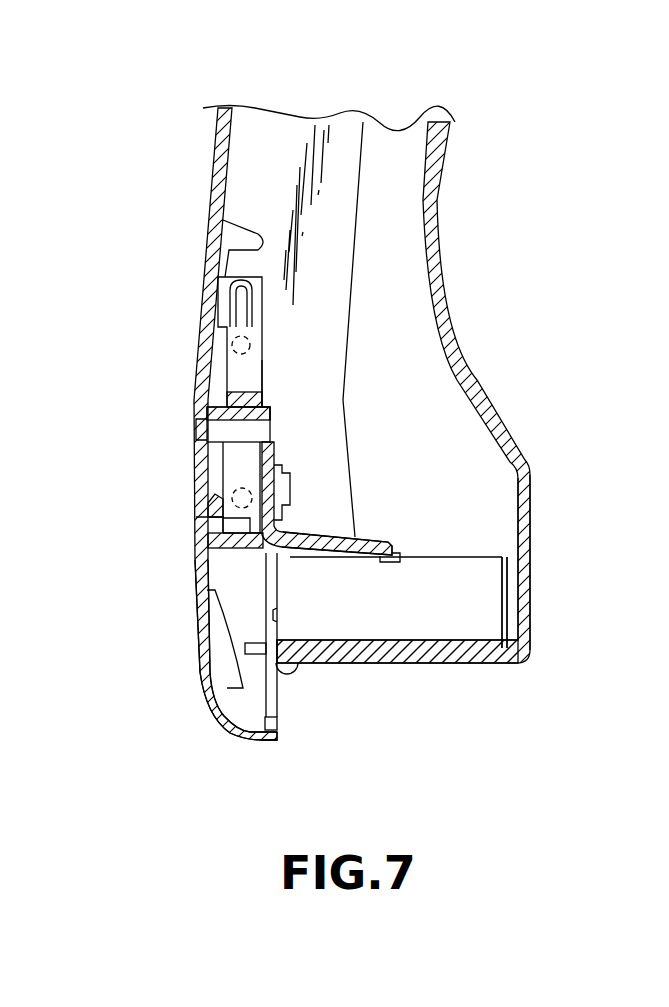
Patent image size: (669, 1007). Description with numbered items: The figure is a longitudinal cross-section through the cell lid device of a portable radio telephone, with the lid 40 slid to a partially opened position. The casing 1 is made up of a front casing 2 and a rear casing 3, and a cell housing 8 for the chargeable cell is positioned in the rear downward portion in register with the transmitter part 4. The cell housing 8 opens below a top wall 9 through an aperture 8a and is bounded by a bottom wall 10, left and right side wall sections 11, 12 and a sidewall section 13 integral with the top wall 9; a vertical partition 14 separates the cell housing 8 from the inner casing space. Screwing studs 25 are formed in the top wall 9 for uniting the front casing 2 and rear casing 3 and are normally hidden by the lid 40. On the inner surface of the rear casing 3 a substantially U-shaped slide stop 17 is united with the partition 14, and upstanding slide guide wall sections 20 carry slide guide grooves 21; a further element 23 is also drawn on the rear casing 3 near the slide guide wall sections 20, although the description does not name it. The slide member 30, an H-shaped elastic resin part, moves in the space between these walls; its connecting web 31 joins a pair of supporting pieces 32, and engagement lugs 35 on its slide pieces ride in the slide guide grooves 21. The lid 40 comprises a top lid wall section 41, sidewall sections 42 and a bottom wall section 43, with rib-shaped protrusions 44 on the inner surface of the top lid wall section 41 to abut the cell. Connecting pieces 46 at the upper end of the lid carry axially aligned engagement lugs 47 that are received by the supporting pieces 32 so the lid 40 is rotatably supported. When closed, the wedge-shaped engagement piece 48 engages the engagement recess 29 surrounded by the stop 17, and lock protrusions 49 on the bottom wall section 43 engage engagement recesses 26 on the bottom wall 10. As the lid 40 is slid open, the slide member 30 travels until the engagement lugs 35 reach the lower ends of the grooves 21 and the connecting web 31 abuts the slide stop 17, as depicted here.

The casing 1 is at (310, 48).
The front casing 2 is at (392, 133).
The rear casing 3 is at (311, 118).
The transmitter part 4 is at (531, 478).
The cell housing 8 is at (450, 590).
The aperture 8a is at (276, 552).
The top wall 9 is at (275, 440).
The bottom wall 10 is at (487, 664).
The left side wall section 11 is at (506, 613).
The right side wall section 12 is at (504, 602).
The sidewall section 13 is at (395, 548).
The vertical partition 14 is at (205, 435).
The slide stop 17 is at (263, 415).
The slide guide wall section 20 is at (218, 312).
The slide guide groove 21 is at (232, 283).
The hook 23 is at (223, 222).
The screwing stud 25 is at (290, 480).
The engagement recess 26 is at (277, 686).
The engagement recess 29 is at (198, 416).
The slide member 30 is at (305, 362).
The connecting web 31 is at (262, 383).
The supporting piece 32 is at (262, 355).
The engagement lug 35 is at (252, 345).
The lid 40 is at (185, 674).
The top lid wall section 41 is at (197, 628).
The sidewall section 42 is at (233, 738).
The bottom wall section 43 is at (250, 738).
The rib-shaped protrusion 44 is at (227, 688).
The connecting piece 46 is at (245, 548).
The engagement lug 47 is at (240, 490).
The engagement piece 48 is at (207, 497).
The lock protrusion 49 is at (278, 724).